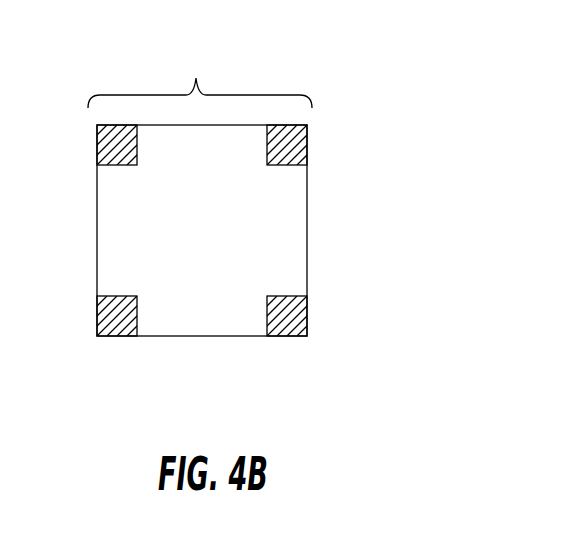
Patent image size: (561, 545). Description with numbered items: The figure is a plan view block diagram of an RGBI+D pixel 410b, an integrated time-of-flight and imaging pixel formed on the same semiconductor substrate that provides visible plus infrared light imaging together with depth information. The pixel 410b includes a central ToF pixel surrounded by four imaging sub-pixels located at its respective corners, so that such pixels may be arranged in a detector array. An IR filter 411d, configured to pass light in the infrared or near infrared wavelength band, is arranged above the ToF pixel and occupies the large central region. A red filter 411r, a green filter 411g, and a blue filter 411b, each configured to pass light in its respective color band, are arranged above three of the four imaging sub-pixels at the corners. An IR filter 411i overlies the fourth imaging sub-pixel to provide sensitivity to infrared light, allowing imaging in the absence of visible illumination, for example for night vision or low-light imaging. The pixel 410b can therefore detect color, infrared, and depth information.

The RGBI+D pixel 410b is at (188, 63).
The green filter 411g is at (118, 145).
The red filter 411r is at (288, 143).
The IR filter 411d is at (247, 220).
The blue filter 411b is at (133, 302).
The IR filter 411i is at (285, 313).